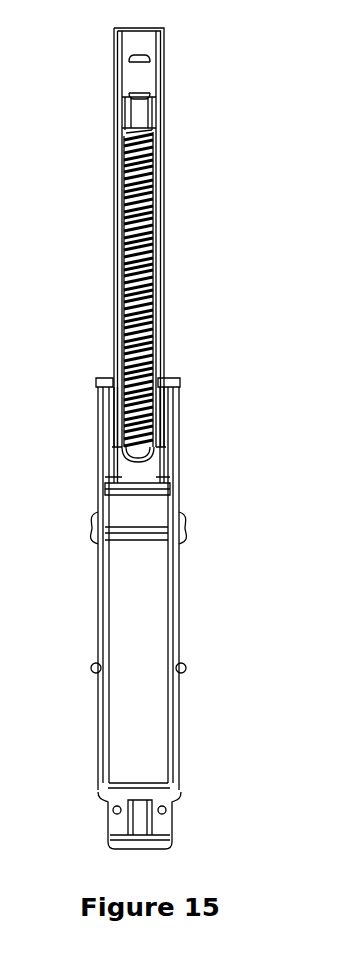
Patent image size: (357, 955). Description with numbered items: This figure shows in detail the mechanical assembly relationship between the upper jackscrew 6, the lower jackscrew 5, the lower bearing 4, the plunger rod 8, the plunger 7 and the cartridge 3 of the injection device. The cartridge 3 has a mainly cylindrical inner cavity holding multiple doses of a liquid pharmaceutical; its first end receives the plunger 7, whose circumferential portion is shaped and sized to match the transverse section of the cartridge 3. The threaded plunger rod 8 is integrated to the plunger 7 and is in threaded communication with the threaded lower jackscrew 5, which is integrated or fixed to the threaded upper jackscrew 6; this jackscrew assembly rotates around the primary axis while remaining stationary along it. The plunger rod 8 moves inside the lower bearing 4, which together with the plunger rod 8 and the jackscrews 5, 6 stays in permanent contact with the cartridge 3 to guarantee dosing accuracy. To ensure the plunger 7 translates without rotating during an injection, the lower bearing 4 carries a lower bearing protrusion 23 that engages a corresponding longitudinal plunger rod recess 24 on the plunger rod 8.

The cartridge 3 is at (108, 742).
The lower bearing 4 is at (115, 352).
The lower jackscrew 5 is at (130, 297).
The upper jackscrew 6 is at (148, 46).
The plunger 7 is at (128, 514).
The plunger rod 8 is at (132, 470).
The lower bearing protrusion 23 is at (158, 412).
The plunger rod recess 24 is at (152, 432).